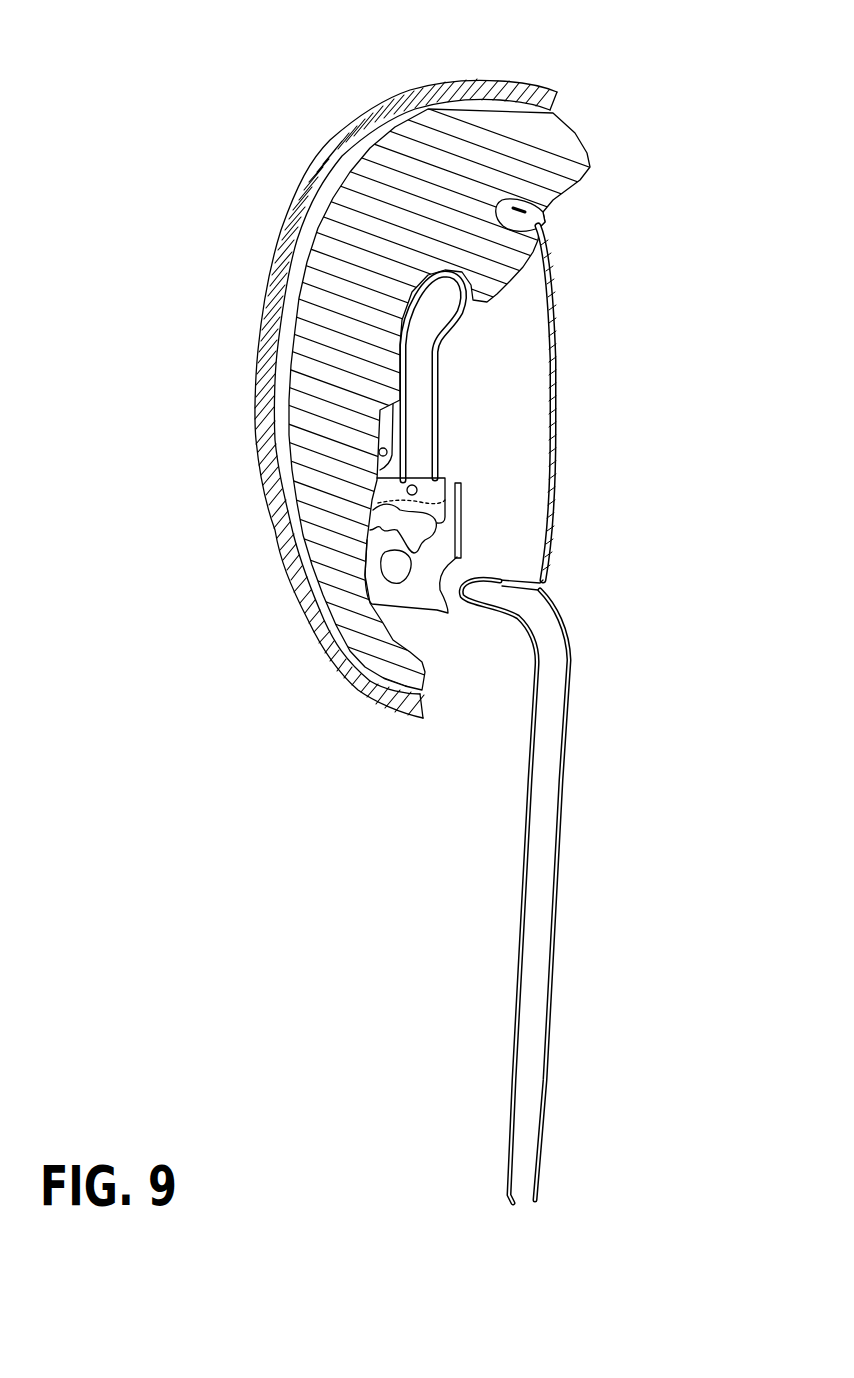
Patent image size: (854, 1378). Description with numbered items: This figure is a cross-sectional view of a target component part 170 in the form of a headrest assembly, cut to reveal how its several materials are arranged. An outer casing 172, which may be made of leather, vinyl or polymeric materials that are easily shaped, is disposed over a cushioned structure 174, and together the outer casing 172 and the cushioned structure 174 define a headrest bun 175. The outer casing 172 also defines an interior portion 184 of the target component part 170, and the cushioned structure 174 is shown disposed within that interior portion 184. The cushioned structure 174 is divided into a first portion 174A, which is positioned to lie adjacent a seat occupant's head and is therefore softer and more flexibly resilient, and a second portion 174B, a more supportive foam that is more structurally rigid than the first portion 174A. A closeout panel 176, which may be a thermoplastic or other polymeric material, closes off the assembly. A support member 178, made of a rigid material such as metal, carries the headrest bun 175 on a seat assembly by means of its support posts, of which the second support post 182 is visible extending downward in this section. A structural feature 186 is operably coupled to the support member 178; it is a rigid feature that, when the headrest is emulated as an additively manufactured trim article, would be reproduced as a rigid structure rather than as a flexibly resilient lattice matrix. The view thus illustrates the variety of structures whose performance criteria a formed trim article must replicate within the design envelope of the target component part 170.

The target component part 170 is at (646, 70).
The outer casing 172 is at (312, 163).
The cushioned structure 174 is at (560, 139).
The first portion 174A is at (316, 391).
The second portion 174B is at (545, 228).
The headrest bun 175 is at (208, 294).
The closeout panel 176 is at (558, 422).
The support member 178 is at (518, 891).
The second support post 182 is at (553, 848).
The interior portion 184 is at (488, 364).
The structural feature 186 is at (480, 487).